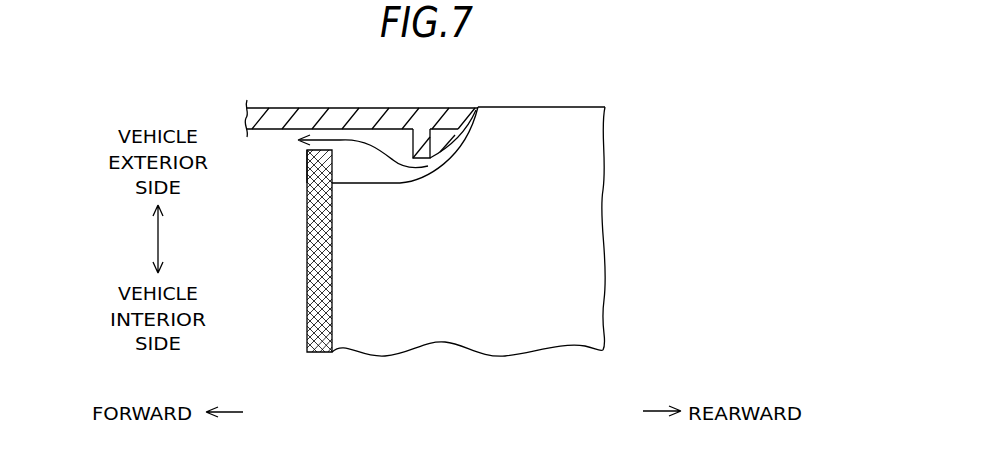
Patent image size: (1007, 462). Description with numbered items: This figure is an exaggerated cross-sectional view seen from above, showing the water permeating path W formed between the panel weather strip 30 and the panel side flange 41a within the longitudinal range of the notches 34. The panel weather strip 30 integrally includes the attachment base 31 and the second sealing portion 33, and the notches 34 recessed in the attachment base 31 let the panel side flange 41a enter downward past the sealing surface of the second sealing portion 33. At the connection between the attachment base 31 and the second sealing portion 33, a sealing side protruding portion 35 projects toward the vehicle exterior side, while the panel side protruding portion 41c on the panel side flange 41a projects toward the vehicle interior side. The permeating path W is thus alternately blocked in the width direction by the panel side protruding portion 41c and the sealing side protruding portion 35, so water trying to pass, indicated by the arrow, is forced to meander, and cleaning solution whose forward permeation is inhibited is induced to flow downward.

The panel weather strip 30 is at (551, 96).
The attachment base 31 is at (447, 343).
The second sealing portion 33 is at (333, 258).
The notch 34 is at (360, 183).
The sealing side protruding portion 35 is at (306, 176).
The panel side flange 41a is at (337, 118).
The panel side protruding portion 41c is at (433, 135).
The water permeating path W is at (395, 132).